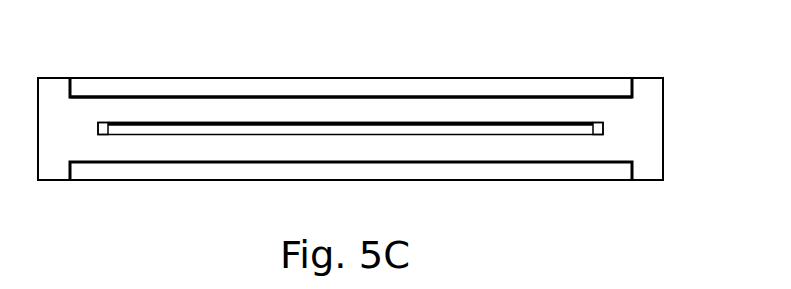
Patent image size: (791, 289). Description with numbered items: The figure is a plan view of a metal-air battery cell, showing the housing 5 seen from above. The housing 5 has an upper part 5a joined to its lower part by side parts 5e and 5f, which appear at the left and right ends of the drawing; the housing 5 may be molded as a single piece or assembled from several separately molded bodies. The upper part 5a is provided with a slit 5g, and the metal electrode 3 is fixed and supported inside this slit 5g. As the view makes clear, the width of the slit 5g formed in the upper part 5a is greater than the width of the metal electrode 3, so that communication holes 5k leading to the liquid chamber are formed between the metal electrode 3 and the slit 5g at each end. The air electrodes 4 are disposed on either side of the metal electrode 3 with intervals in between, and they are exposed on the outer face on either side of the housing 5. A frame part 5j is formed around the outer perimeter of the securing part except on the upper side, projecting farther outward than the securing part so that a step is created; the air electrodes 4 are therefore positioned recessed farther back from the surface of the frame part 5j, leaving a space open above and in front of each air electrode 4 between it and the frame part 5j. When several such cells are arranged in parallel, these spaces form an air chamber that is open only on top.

The metal electrode 3 is at (227, 129).
The air electrode 4 is at (502, 96).
The housing 5 is at (655, 100).
The upper part 5a is at (655, 137).
The side part 5e is at (167, 181).
The side part 5f is at (109, 96).
The slit 5g is at (295, 121).
The frame part 5j is at (53, 77).
The communication hole 5k is at (102, 139).